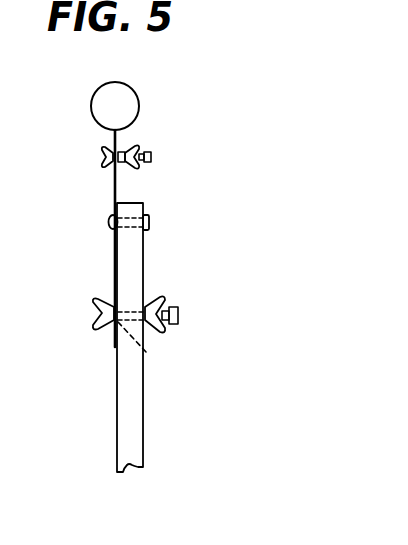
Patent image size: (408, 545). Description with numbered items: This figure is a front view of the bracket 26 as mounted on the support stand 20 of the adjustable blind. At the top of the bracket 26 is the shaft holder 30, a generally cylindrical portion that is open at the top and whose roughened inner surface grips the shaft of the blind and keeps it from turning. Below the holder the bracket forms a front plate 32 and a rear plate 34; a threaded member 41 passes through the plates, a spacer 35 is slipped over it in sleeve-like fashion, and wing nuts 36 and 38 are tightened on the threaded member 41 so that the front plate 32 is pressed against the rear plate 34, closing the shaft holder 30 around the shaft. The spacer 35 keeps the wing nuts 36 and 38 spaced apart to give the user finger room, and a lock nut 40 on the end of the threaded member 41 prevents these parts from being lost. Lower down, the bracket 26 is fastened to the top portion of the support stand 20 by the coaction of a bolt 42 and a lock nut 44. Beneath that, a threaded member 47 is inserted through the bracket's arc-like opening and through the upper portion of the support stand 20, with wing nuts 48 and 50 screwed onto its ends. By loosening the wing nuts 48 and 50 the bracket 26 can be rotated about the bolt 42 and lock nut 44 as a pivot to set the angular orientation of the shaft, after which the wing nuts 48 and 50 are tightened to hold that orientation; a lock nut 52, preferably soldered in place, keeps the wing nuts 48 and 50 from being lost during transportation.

The support stand 20 is at (135, 418).
The bracket 26 is at (75, 128).
The shaft holder 30 is at (134, 89).
The front plate 32 is at (112, 180).
The rear plate 34 is at (117, 142).
The spacer 35 is at (123, 163).
The wing nut 36 is at (103, 158).
The wing nut 38 is at (137, 147).
The lock nut 40 is at (152, 160).
The threaded member 41 is at (147, 152).
The bolt 42 is at (108, 225).
The lock nut 44 is at (150, 224).
The threaded member 47 is at (149, 355).
The wing nut 48 is at (97, 321).
The wing nut 50 is at (152, 300).
The lock nut 52 is at (178, 315).